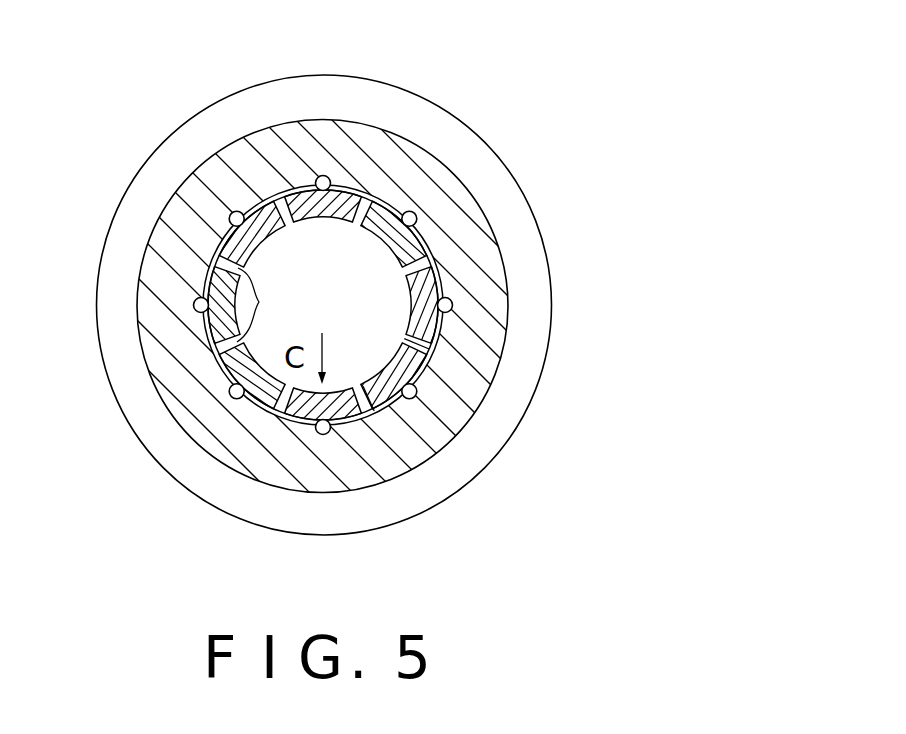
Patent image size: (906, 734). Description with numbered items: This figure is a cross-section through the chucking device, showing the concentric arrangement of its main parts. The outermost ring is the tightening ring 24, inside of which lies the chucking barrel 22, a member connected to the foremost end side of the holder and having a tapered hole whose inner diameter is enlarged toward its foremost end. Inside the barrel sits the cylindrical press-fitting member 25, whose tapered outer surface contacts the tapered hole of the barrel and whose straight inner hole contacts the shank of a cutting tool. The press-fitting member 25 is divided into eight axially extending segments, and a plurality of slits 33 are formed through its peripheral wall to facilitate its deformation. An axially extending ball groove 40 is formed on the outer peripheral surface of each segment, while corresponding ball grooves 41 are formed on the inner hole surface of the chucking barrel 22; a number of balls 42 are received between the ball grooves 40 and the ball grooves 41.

The chucking barrel 22 is at (407, 158).
The tightening ring 24 is at (134, 405).
The cylindrical press-fitting member 25 is at (371, 304).
The slits 33 is at (545, 431).
The ball groove 40 is at (321, 190).
The ball grooves 41 is at (323, 175).
The balls 42 is at (438, 303).